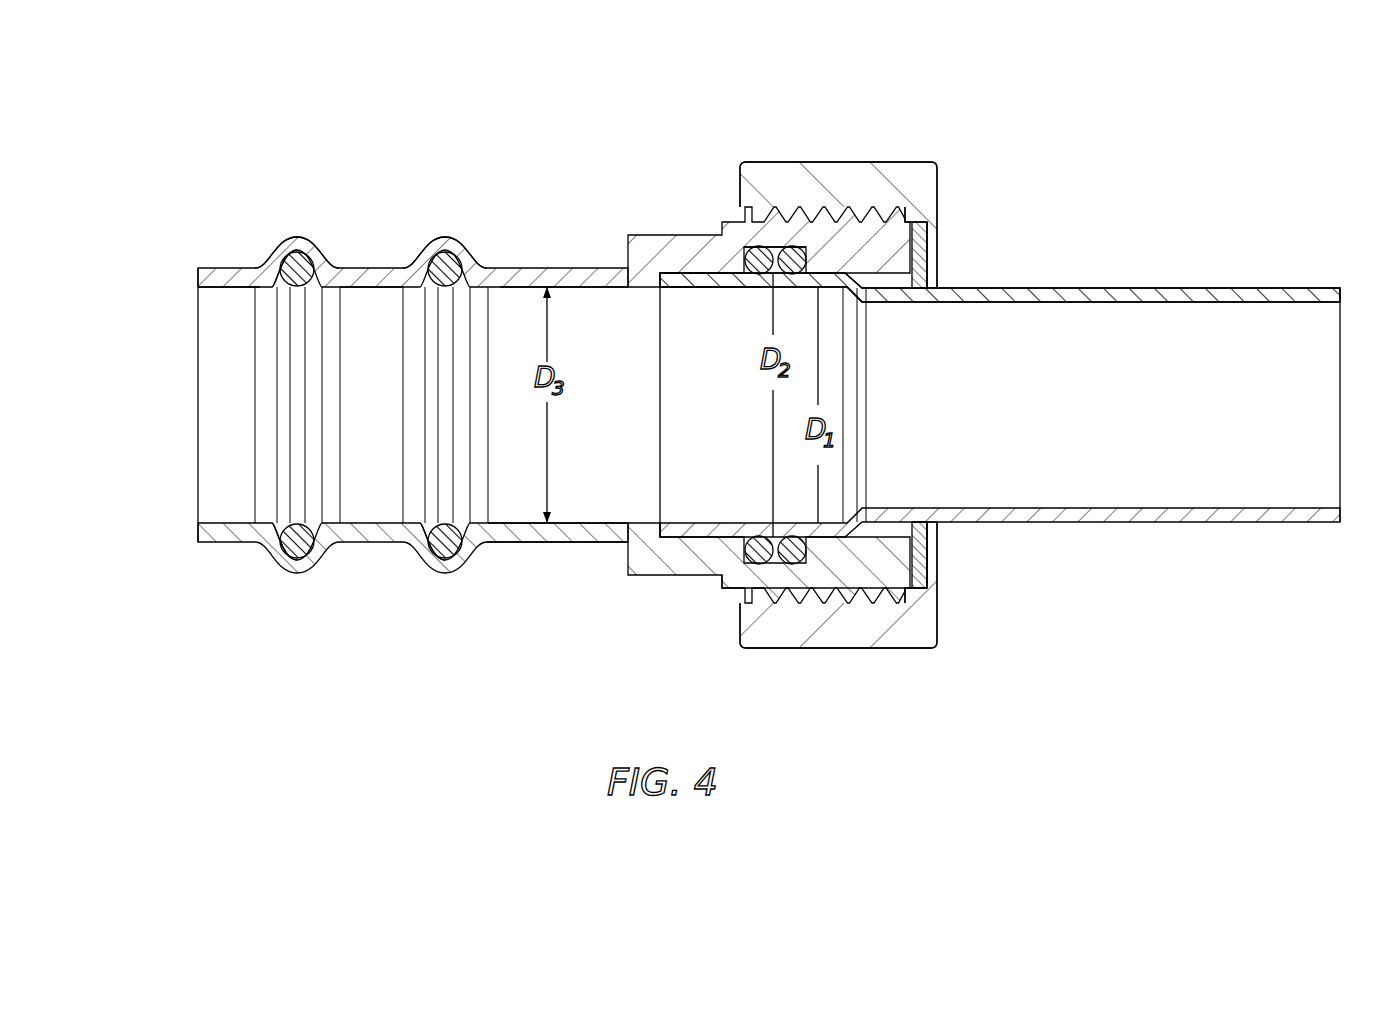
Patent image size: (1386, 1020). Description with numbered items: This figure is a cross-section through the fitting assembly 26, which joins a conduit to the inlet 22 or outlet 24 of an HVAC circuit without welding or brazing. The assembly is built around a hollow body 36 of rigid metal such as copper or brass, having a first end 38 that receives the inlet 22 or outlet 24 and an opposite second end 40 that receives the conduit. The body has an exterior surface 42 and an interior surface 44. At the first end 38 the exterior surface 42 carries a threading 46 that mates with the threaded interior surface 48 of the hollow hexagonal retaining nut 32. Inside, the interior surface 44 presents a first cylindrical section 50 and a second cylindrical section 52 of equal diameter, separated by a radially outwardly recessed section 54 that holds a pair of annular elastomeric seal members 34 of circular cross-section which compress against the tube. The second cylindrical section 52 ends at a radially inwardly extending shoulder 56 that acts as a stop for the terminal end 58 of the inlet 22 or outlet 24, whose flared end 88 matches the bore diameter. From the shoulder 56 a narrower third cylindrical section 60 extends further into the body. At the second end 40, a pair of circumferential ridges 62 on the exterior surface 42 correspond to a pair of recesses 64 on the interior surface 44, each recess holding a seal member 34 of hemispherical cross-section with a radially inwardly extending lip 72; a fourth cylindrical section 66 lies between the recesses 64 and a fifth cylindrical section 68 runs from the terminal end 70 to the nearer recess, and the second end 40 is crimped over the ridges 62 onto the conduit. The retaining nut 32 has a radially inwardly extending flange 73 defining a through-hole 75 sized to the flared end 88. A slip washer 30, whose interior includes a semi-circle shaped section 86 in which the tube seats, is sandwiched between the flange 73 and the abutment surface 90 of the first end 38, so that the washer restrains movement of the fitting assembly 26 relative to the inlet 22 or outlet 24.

The inlet 22 is at (1130, 523).
The outlet 24 is at (1000, 438).
The fitting assembly 26 is at (505, 582).
The slip washer 30 is at (923, 250).
The retaining nut 32 is at (870, 635).
The seal members 34 is at (318, 262).
The hollow body 36 is at (567, 268).
The first end 38 is at (750, 582).
The second end 40 is at (227, 548).
The exterior surface 42 is at (585, 542).
The interior surface 44 is at (587, 289).
The threading 46 is at (848, 208).
The threaded interior surface 48 is at (925, 235).
The first cylindrical section 50 is at (927, 273).
The second cylindrical section 52 is at (698, 287).
The recessed section 54 is at (763, 252).
The shoulder 56 is at (660, 518).
The terminal end 58 is at (681, 278).
The third cylindrical section 60 is at (517, 522).
The ridges 62 is at (288, 238).
The recesses 64 is at (297, 555).
The fourth cylindrical section 66 is at (367, 290).
The fifth cylindrical section 68 is at (227, 288).
The terminal end 70 is at (197, 278).
The lip 72 is at (297, 286).
The flange 73 is at (933, 553).
The through-hole 75 is at (937, 522).
The semi-circle shaped section 86 is at (917, 525).
The flared end 88 is at (723, 576).
The abutment surface 90 is at (918, 570).